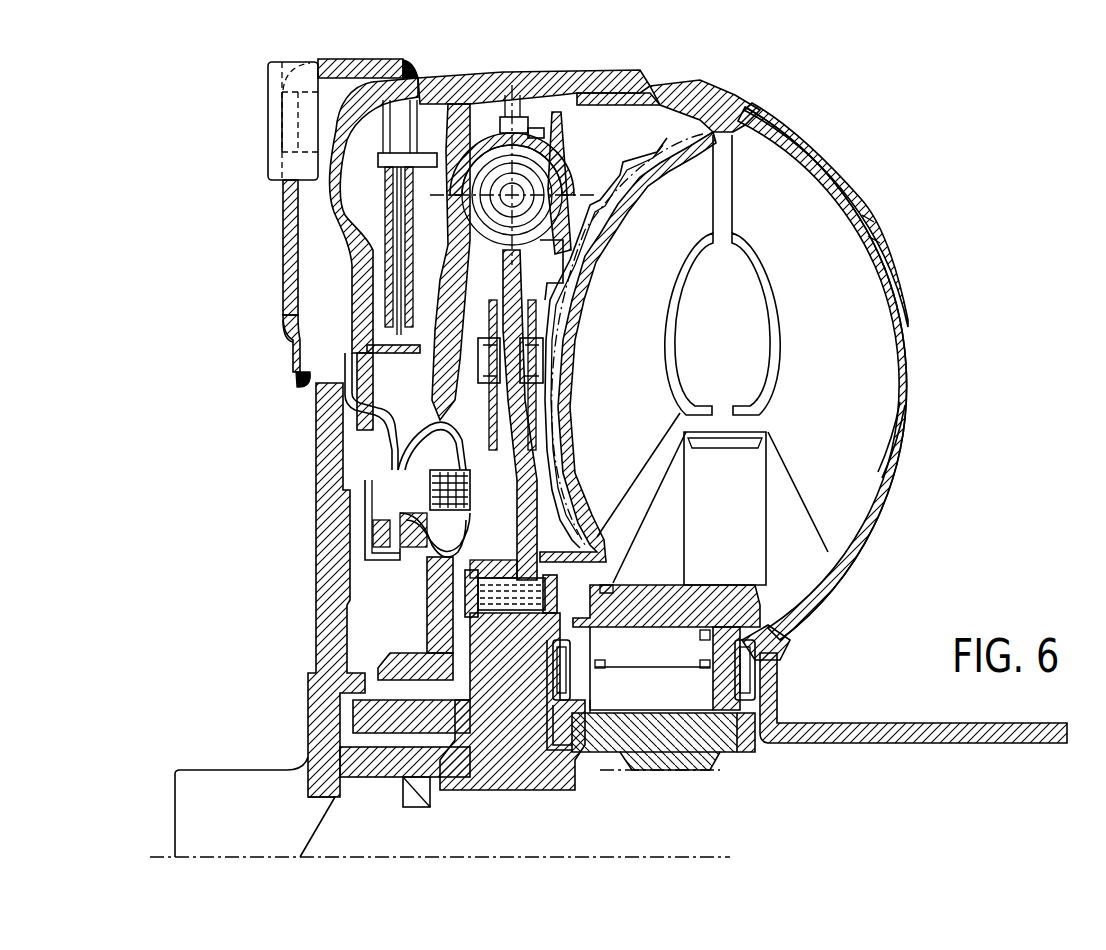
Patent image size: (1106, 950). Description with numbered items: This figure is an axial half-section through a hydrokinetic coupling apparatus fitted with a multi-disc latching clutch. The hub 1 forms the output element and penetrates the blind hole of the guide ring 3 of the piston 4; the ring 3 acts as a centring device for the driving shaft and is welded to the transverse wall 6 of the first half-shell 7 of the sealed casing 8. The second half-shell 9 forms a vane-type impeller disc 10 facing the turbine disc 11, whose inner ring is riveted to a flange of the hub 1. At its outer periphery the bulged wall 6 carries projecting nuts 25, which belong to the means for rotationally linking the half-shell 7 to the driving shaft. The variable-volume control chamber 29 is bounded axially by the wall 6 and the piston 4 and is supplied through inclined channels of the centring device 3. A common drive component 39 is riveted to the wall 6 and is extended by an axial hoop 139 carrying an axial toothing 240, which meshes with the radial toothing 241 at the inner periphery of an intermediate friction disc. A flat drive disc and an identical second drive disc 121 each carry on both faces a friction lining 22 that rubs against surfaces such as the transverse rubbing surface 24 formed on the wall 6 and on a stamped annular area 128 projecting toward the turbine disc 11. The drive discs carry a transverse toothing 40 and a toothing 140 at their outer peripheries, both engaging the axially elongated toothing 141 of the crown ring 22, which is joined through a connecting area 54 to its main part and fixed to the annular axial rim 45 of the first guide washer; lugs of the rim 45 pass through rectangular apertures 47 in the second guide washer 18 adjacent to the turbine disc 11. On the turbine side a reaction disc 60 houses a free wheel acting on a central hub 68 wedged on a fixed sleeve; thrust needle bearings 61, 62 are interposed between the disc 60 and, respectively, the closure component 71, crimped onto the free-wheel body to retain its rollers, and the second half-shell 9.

The hub 1 is at (390, 795).
The guide ring 3 is at (212, 772).
The piston 4 is at (345, 487).
The transverse wall 6 is at (317, 633).
The first half-shell 7 is at (435, 82).
The sealed casing 8 is at (767, 117).
The second half-shell 9 is at (907, 437).
The vane-type impeller disc 10 is at (846, 357).
The turbine disc 11 is at (638, 362).
The second guide washer 18 is at (580, 167).
The friction lining 22 is at (300, 254).
The rubbing surface 24 is at (375, 335).
The nuts 25 is at (267, 163).
The variable-volume control chamber 29 is at (412, 612).
The common drive component 39 is at (390, 440).
The transverse toothing 40 is at (375, 112).
The annular rim 45 is at (537, 132).
The apertures 47 is at (512, 648).
The connecting area 54 is at (445, 130).
The reaction disc 60 is at (770, 520).
The needle bearing 61 is at (565, 700).
The needle bearing 62 is at (748, 667).
The central hub 68 is at (723, 735).
The closure component 71 is at (600, 705).
The second drive disc 121 is at (375, 162).
The stamped annular area 128 is at (345, 270).
The axial hoop 139 is at (385, 375).
The toothing 140 is at (338, 206).
The toothing 141 is at (392, 130).
The toothing 240 is at (400, 390).
The toothing 241 is at (380, 326).